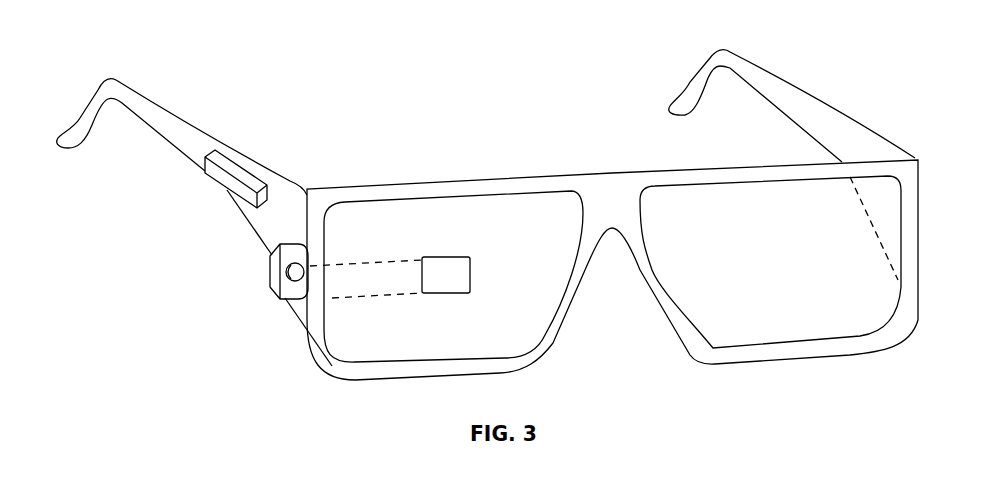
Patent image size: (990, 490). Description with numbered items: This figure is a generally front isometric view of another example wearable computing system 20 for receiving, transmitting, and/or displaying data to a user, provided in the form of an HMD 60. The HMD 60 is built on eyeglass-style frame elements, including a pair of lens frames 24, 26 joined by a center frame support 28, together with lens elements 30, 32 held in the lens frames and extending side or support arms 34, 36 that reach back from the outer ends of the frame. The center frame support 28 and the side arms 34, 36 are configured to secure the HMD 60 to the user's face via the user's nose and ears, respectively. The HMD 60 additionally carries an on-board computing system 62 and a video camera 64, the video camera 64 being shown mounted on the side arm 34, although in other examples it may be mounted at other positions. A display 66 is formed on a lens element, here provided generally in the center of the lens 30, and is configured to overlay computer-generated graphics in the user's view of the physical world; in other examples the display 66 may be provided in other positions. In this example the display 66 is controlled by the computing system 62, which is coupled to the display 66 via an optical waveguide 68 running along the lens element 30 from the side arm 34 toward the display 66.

The system 20 is at (893, 79).
The lens frame 24 is at (383, 188).
The lens frame 26 is at (693, 171).
The center frame support 28 is at (615, 193).
The lens element 30 is at (413, 357).
The lens element 32 is at (770, 336).
The side arm 34 is at (202, 138).
The side arm 36 is at (778, 90).
The HMD 60 is at (476, 160).
The on-board computing system 62 is at (225, 177).
The video camera 64 is at (273, 278).
The display 66 is at (443, 293).
The optical waveguide 68 is at (353, 297).